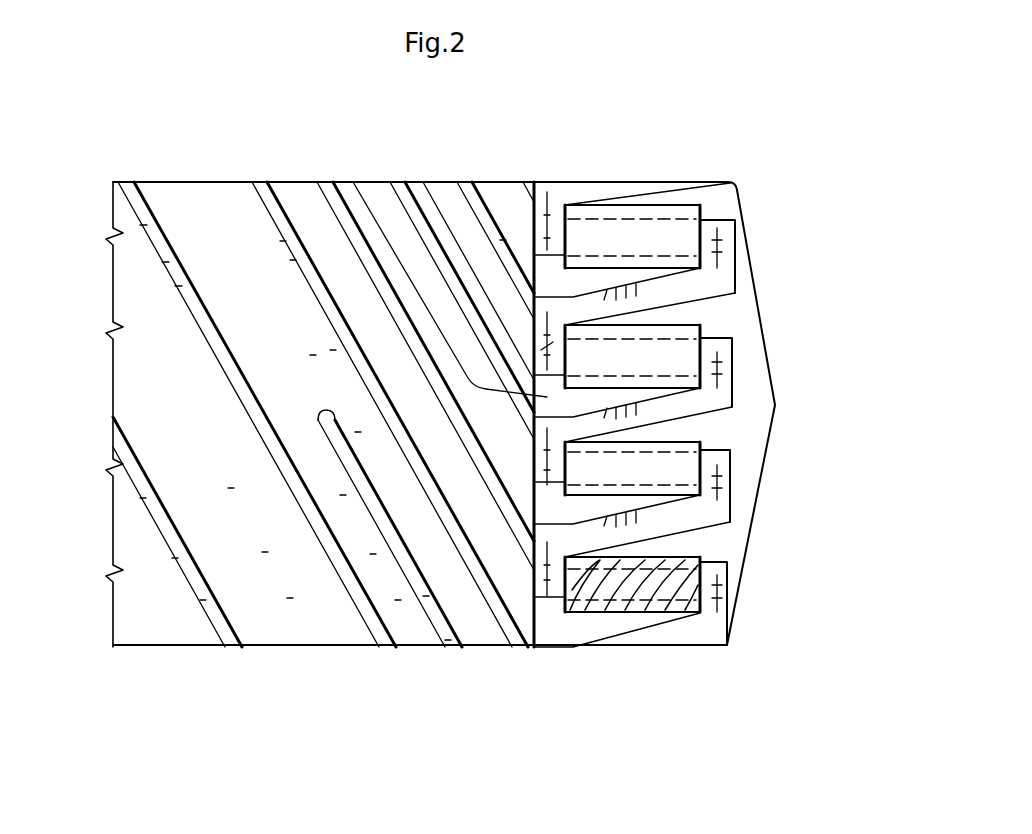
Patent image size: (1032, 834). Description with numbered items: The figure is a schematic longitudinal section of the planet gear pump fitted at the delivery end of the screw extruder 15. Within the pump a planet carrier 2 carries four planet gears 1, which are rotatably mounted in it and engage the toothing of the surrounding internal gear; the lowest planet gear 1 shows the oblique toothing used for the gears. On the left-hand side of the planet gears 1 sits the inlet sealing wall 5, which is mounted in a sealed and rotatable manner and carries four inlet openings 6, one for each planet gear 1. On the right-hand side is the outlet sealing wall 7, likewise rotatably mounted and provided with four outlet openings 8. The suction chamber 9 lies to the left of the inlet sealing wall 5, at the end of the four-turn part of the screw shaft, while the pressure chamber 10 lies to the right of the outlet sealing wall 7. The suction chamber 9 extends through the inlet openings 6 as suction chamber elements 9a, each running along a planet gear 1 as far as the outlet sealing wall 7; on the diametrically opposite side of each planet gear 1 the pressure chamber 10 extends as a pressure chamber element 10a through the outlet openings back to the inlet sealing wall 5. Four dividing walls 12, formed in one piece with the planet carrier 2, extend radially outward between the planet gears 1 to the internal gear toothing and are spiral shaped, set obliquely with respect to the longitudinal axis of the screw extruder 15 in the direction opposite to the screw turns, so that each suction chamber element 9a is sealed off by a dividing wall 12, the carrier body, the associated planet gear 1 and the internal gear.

The planet gear 1 is at (687, 230).
The planet carrier 2 is at (612, 290).
The inlet sealing wall 5 is at (420, 193).
The inlet opening 6 is at (343, 195).
The outlet sealing wall 7 is at (712, 248).
The outlet opening 8 is at (703, 302).
The suction chamber 9 is at (488, 205).
The suction chamber element 9a is at (575, 288).
The pressure chamber 10 is at (747, 352).
The pressure chamber element 10a is at (684, 196).
The dividing wall 12 is at (700, 282).
The screw extruder 15 is at (94, 542).